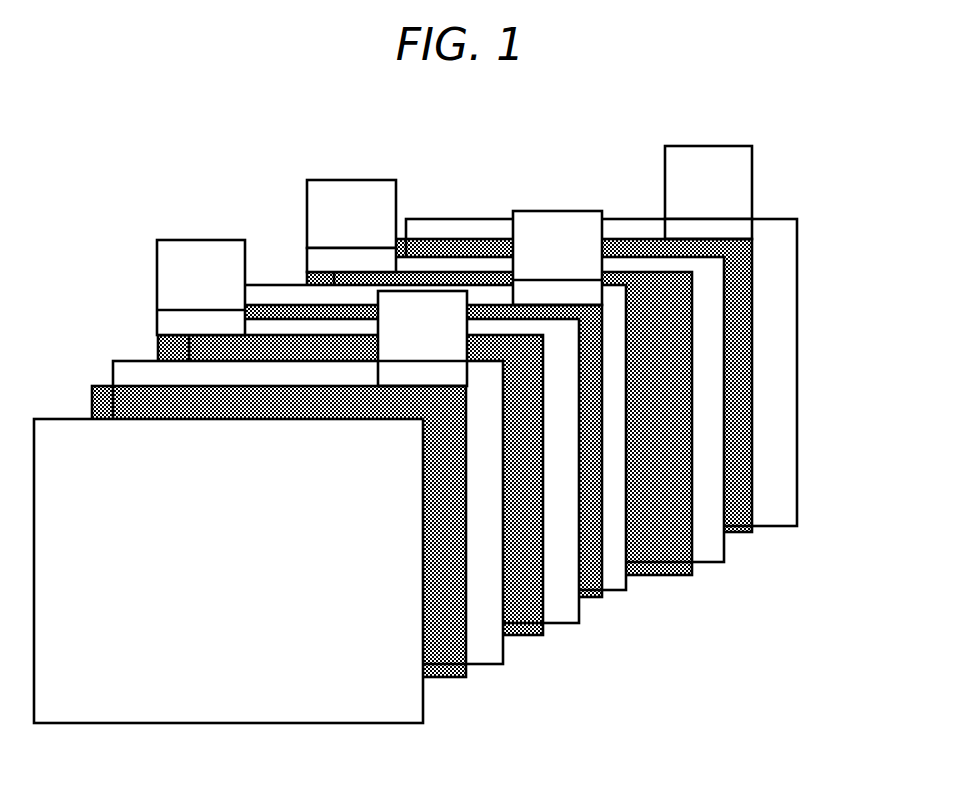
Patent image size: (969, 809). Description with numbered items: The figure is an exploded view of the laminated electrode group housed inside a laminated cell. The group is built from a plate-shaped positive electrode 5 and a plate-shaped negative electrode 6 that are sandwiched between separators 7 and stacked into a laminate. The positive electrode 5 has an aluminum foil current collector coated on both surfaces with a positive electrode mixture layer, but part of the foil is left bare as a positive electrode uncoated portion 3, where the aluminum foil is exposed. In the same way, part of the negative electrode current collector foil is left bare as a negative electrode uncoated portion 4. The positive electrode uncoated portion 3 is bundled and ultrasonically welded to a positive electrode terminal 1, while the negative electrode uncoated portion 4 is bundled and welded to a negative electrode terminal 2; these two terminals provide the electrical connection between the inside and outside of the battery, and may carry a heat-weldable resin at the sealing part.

The positive electrode terminal 1 is at (322, 206).
The negative electrode terminal 2 is at (733, 176).
The positive electrode uncoated portion 3 is at (323, 258).
The negative electrode uncoated portion 4 is at (733, 228).
The positive electrode 5 is at (677, 307).
The negative electrode 6 is at (740, 360).
The separator 7 is at (710, 440).